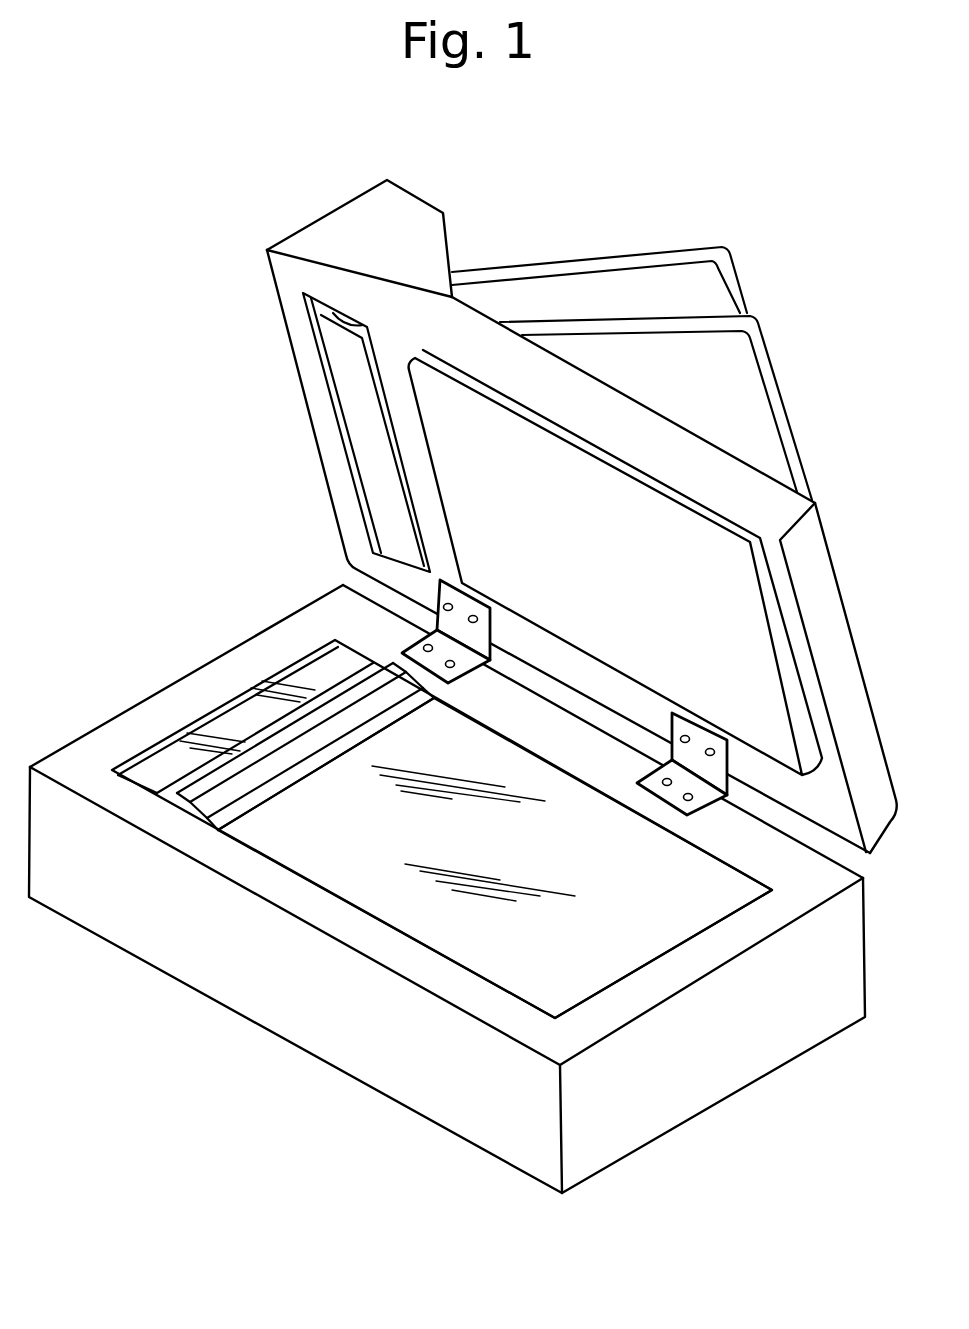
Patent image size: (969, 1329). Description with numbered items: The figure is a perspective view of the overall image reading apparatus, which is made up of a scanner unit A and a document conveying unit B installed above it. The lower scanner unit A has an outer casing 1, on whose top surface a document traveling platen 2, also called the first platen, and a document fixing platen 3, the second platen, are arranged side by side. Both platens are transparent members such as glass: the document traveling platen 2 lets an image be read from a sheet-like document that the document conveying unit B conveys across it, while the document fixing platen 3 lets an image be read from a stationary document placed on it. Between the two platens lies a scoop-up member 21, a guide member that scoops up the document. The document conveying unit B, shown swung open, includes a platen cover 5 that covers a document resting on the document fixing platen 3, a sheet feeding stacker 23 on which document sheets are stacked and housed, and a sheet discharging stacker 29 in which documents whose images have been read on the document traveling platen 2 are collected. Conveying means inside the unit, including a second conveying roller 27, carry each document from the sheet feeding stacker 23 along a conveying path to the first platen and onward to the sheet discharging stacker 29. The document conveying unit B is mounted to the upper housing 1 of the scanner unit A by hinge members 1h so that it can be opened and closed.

The outer casing 1 is at (200, 962).
The hinge members 1h is at (462, 607).
The document traveling platen 2 is at (245, 713).
The document fixing platen 3 is at (428, 917).
The platen cover 5 is at (733, 620).
The scoop-up member 21 is at (337, 700).
The sheet feeding stacker 23 is at (620, 275).
The second conveying roller 27 is at (375, 427).
The sheet discharging stacker 29 is at (725, 375).
The scanner unit A is at (134, 655).
The document conveying unit B is at (300, 212).